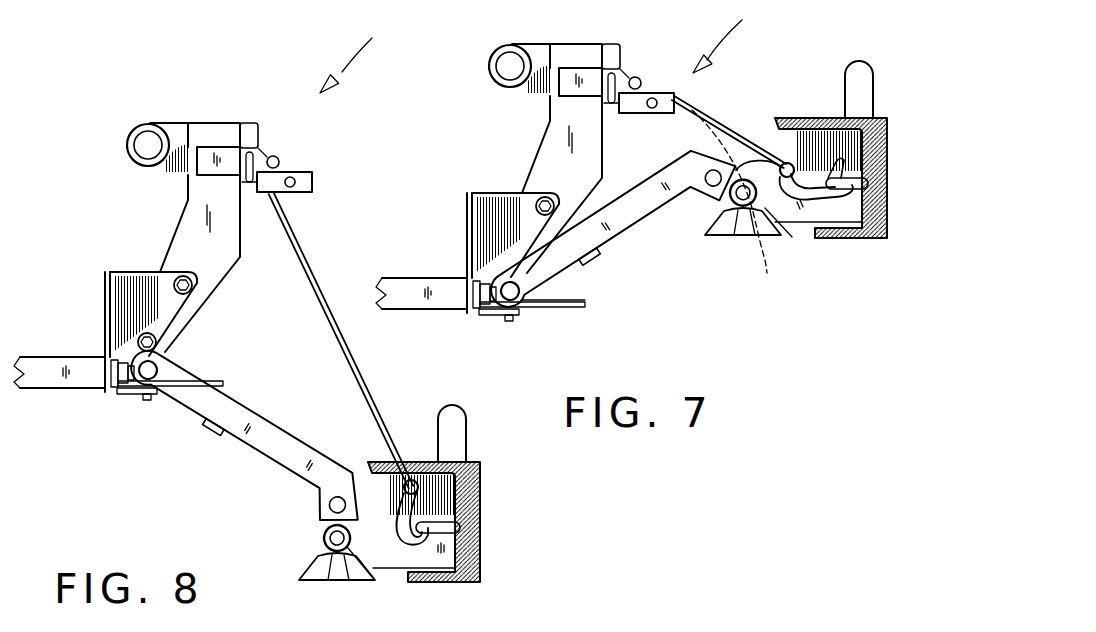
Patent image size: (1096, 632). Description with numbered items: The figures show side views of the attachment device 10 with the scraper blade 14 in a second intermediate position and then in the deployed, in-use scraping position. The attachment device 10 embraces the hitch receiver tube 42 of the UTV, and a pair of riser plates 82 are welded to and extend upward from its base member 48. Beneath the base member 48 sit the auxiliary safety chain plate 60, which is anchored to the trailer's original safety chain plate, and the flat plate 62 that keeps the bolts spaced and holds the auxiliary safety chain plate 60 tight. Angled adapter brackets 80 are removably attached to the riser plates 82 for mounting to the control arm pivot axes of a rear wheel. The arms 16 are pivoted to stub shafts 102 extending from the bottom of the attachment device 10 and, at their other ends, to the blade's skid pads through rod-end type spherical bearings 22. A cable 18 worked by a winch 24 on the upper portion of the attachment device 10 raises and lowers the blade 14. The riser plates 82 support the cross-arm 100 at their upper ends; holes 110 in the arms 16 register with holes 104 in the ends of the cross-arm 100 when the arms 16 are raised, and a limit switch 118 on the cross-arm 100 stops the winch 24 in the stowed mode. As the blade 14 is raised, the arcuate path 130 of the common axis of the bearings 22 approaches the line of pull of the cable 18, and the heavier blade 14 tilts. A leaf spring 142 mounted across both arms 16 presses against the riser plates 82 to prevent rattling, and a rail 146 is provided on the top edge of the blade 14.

In FIG. 8, the attachment device 10 is at (365, 53).
In FIG. 7, the attachment device 10 is at (738, 36).
In FIG. 8, the scraper blade 14 is at (477, 528).
In FIG. 7, the scraper blade 14 is at (823, 118).
In FIG. 8, the arms 16 is at (277, 408).
In FIG. 7, the arms 16 is at (607, 217).
In FIG. 8, the cable 18 is at (307, 275).
In FIG. 7, the cable 18 is at (736, 128).
In FIG. 8, the rod-end type spherical bearings 22 is at (322, 542).
In FIG. 7, the rod-end type spherical bearings 22 is at (737, 238).
In FIG. 8, the winch 24 is at (128, 135).
In FIG. 8, the hitch receiver tube 42 is at (83, 357).
In FIG. 7, the hitch receiver tube 42 is at (414, 269).
In FIG. 7, the base member 48 is at (591, 306).
In FIG. 7, the auxiliary safety chain plate 60 is at (554, 333).
In FIG. 7, the flat plate 62 is at (517, 337).
In FIG. 8, the angled adapter brackets 80 is at (105, 306).
In FIG. 7, the angled adapter brackets 80 is at (473, 253).
In FIG. 8, the riser plates 82 is at (167, 258).
In FIG. 7, the riser plates 82 is at (555, 158).
In FIG. 8, the cross-arm 100 is at (315, 178).
In FIG. 8, the stub shafts 102 is at (140, 383).
In FIG. 7, the stub shafts 102 is at (447, 323).
In FIG. 8, the holes 104 is at (291, 177).
In FIG. 7, the holes 104 is at (646, 57).
In FIG. 8, the holes 110 is at (330, 505).
In FIG. 8, the limit switch 118 is at (212, 147).
In FIG. 7, the arcuate path 130 is at (762, 257).
In FIG. 8, the leaf spring 142 is at (216, 447).
In FIG. 7, the leaf spring 142 is at (606, 254).
In FIG. 8, the rail 146 is at (465, 430).